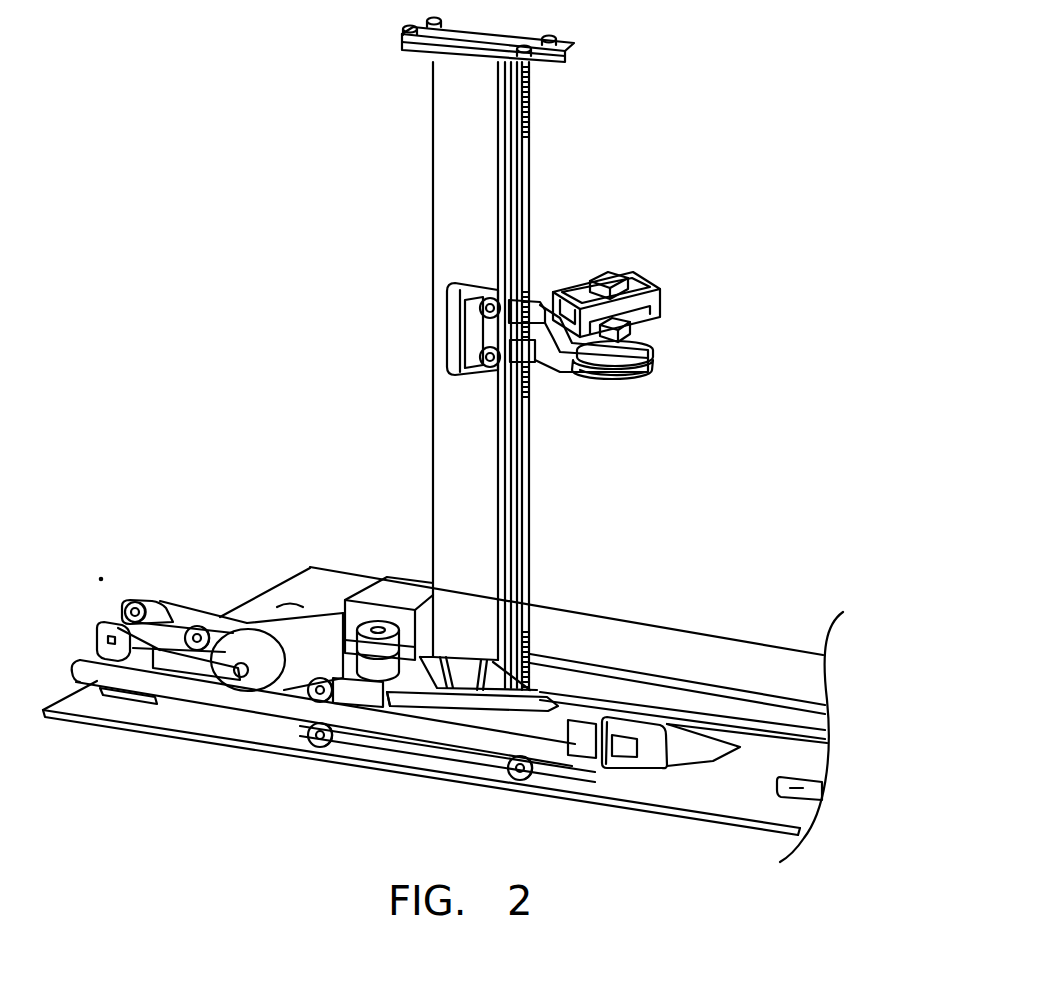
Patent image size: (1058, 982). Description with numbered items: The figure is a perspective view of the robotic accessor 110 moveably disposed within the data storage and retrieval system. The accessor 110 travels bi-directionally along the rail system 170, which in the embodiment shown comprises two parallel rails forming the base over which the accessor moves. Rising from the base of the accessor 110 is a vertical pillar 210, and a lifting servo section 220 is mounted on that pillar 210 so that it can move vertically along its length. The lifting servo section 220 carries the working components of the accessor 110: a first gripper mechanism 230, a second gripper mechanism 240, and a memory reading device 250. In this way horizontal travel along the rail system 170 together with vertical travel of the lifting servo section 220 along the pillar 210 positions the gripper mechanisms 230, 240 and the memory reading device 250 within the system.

The accessor 110 is at (411, 400).
The rail system 170 is at (802, 788).
The vertical pillar 210 is at (451, 176).
The lifting servo section 220 is at (570, 353).
The first gripper mechanism 230 is at (652, 290).
The second gripper mechanism 240 is at (648, 272).
The memory reading device 250 is at (614, 270).